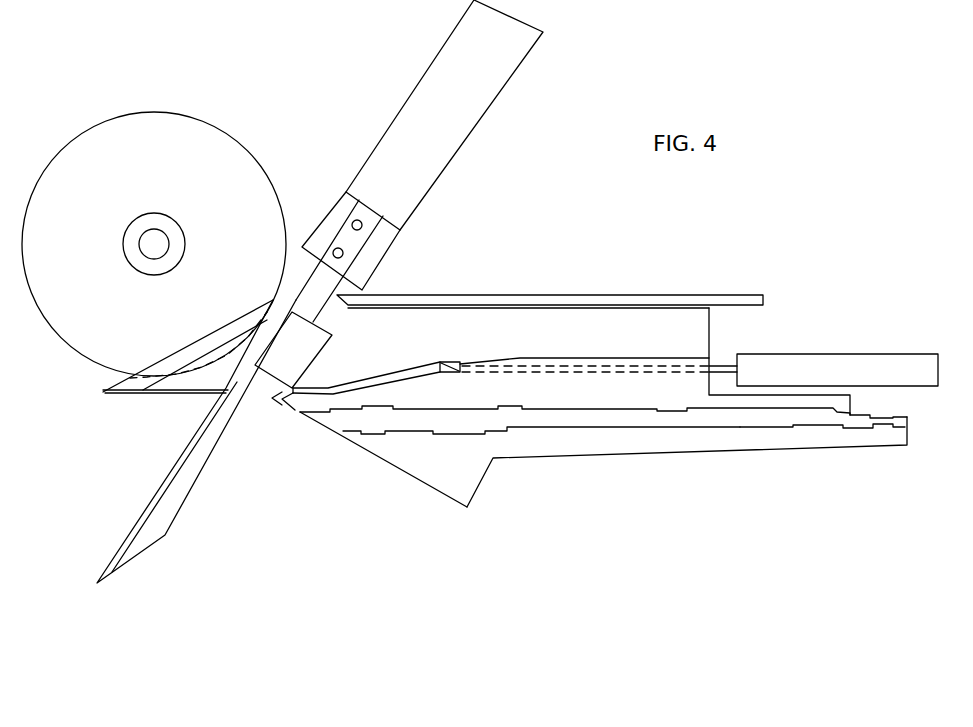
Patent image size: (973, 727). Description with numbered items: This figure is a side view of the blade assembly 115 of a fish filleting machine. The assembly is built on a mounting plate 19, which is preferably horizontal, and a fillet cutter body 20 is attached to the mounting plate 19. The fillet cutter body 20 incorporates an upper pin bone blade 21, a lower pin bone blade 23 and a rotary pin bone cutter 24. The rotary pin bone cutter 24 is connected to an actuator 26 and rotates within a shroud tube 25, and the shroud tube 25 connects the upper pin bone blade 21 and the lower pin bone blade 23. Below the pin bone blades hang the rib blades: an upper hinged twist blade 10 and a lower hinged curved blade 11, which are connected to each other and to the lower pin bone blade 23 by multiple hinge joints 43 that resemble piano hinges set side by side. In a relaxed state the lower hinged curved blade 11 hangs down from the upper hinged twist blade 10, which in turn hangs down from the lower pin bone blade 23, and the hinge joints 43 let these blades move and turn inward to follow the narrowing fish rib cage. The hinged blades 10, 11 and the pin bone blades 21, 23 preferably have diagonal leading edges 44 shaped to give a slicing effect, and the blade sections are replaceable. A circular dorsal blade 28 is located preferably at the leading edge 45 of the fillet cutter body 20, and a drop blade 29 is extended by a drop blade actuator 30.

The upper hinged twist blade 10 is at (562, 420).
The lower hinged curved blade 11 is at (473, 472).
The mounting plate 19 is at (742, 291).
The fillet cutter body 20 is at (712, 334).
The upper pin bone blade 21 is at (410, 368).
The lower pin bone blade 23 is at (417, 393).
The rotary pin bone cutter 24 is at (452, 366).
The shroud tube 25 is at (575, 358).
The actuator 26 is at (864, 353).
The circular dorsal blade 28 is at (243, 152).
The drop blade 29 is at (210, 447).
The drop blade actuator 30 is at (498, 97).
The hinge joint 43 is at (740, 427).
The diagonal leading edge 44 is at (401, 469).
The leading edge 45 is at (195, 337).
The blade assembly 115 is at (566, 264).